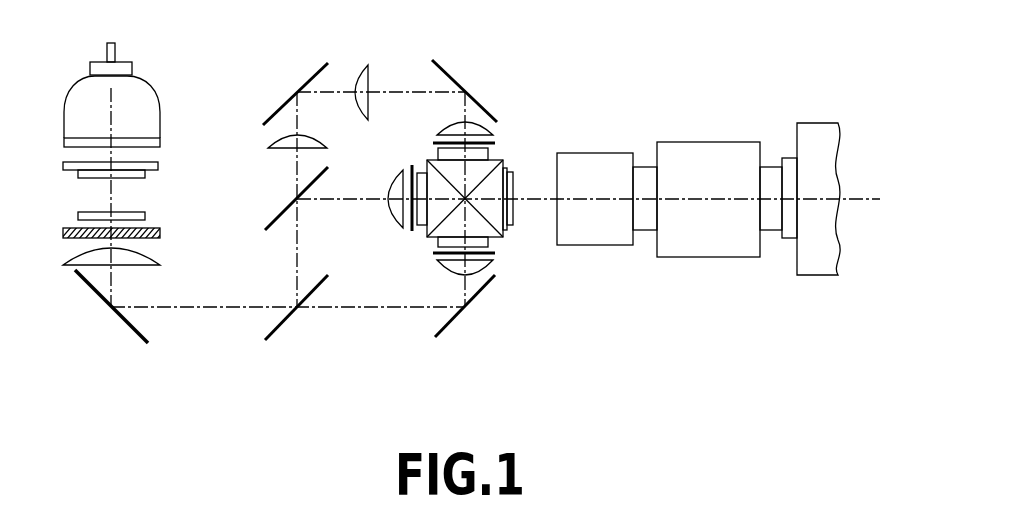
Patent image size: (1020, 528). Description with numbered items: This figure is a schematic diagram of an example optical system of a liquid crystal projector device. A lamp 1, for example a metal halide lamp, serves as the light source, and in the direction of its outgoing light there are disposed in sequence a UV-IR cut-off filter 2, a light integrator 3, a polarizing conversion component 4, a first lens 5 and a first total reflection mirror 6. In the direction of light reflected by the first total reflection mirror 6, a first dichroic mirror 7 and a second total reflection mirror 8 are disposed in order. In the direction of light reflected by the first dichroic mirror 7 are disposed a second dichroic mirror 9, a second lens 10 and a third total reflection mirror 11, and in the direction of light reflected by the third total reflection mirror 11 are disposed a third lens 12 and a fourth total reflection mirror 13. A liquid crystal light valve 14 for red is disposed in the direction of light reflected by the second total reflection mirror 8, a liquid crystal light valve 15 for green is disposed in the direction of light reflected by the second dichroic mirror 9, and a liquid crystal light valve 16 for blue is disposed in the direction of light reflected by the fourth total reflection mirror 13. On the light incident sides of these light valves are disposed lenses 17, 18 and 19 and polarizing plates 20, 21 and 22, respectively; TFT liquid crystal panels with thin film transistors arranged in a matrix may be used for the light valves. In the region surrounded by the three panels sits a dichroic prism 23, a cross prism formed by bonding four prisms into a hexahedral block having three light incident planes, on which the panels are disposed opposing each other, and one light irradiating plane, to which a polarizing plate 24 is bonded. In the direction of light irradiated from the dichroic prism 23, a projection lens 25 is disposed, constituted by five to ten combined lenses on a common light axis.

The lamp 1 is at (156, 102).
The UV-IR cut-off filter 2 is at (160, 165).
The light integrator 3 is at (148, 176).
The polarizing conversion component 4 is at (162, 233).
The first lens 5 is at (160, 264).
The first total reflection mirror 6 is at (133, 338).
The first dichroic mirror 7 is at (265, 336).
The second total reflection mirror 8 is at (433, 333).
The second dichroic mirror 9 is at (271, 230).
The second lens 10 is at (273, 150).
The third total reflection mirror 11 is at (314, 68).
The third lens 12 is at (369, 63).
The fourth total reflection mirror 13 is at (455, 68).
The liquid crystal light valve for R 14 is at (490, 244).
The liquid crystal light valve for G 15 is at (420, 228).
The liquid crystal light valve for B 16 is at (498, 158).
The lens 17 is at (456, 268).
The lens 18 is at (392, 210).
The lens 19 is at (452, 128).
The polarizing plate 20 is at (496, 255).
The polarizing plate 21 is at (408, 172).
The polarizing plate 22 is at (432, 143).
The dichroic prism 23 is at (506, 170).
The polarizing plate 24 is at (514, 176).
The projection lens 25 is at (838, 280).